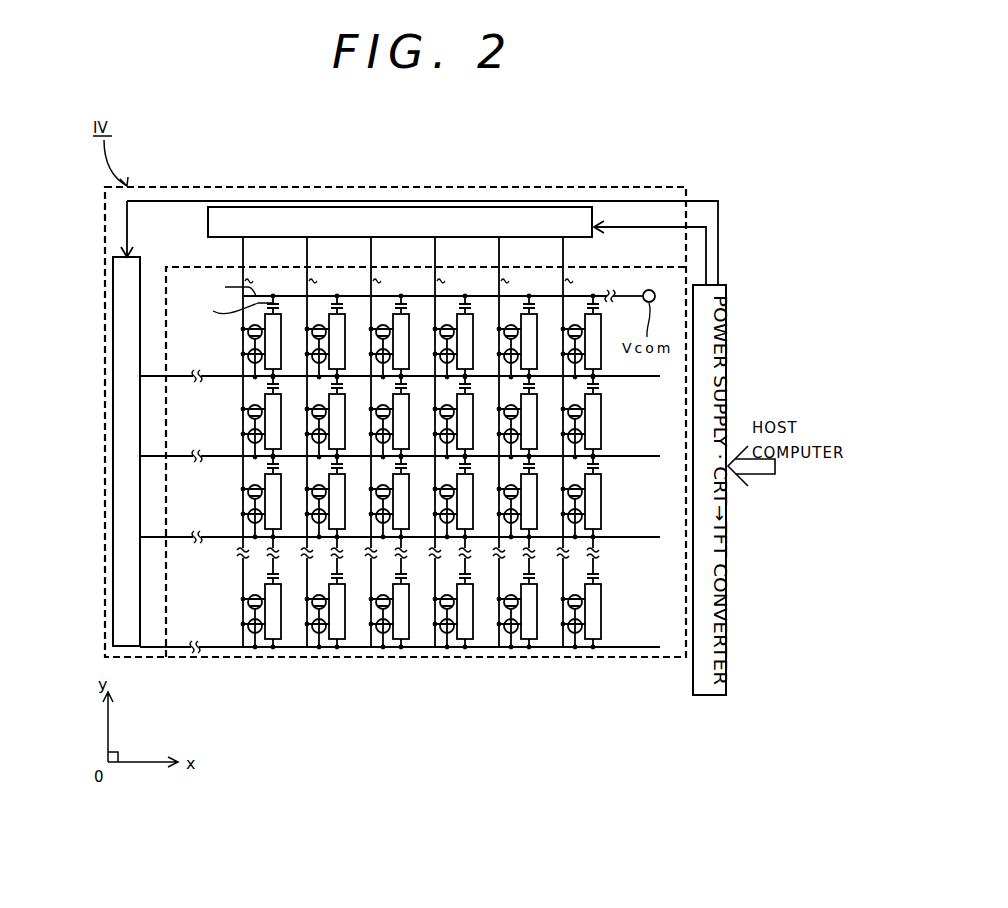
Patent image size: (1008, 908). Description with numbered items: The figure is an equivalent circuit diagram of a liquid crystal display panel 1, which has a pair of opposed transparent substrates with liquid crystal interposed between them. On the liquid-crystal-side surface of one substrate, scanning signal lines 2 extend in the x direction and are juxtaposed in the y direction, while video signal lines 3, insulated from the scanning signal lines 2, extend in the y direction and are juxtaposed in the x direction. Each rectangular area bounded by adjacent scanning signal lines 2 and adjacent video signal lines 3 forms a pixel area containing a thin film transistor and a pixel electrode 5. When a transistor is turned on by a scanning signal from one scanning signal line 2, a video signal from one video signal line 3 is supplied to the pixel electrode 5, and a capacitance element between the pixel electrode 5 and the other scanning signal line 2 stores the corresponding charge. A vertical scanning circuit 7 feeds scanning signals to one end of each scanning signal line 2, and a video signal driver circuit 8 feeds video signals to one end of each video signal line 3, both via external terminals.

The liquid crystal display panel 1 is at (655, 267).
The scanning signal lines 2 is at (152, 376).
The video signal lines 3 is at (243, 266).
The pixel electrode 5 is at (243, 354).
The vertical scanning circuit 7 is at (105, 606).
The video signal driver circuit 8 is at (455, 207).